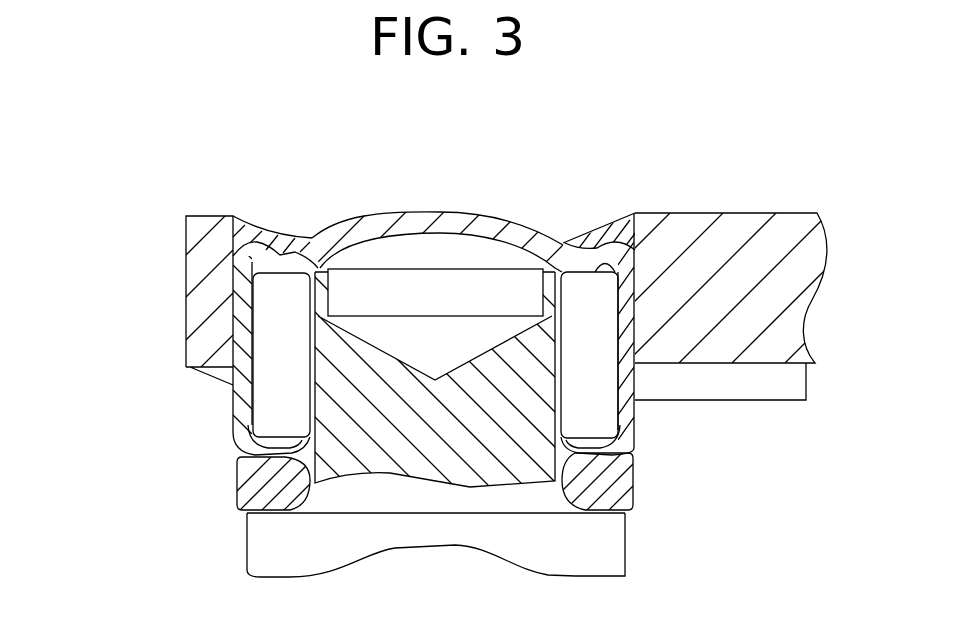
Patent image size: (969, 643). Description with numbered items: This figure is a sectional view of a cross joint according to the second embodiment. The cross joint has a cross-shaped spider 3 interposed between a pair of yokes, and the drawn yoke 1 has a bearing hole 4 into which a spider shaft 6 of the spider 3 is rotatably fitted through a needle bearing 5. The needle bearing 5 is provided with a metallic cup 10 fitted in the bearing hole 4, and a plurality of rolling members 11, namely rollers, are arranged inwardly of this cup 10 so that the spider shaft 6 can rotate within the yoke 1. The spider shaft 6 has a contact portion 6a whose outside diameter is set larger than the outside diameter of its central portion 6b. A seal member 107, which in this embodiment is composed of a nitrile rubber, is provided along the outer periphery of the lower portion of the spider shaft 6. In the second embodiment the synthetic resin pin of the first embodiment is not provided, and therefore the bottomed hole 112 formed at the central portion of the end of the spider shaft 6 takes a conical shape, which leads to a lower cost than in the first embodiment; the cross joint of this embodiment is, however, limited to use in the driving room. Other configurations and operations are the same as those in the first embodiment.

The yoke 1 is at (752, 213).
The spider 3 is at (210, 490).
The bearing hole 4 is at (620, 215).
The needle bearing 5 is at (547, 230).
The spider shaft 6 is at (401, 375).
The contact portion 6a is at (318, 288).
The central portion 6b is at (332, 405).
The metallic cup 10 is at (477, 213).
The rolling members 11 is at (598, 410).
The seal member 107 is at (633, 487).
The bottomed hole 112 is at (417, 282).